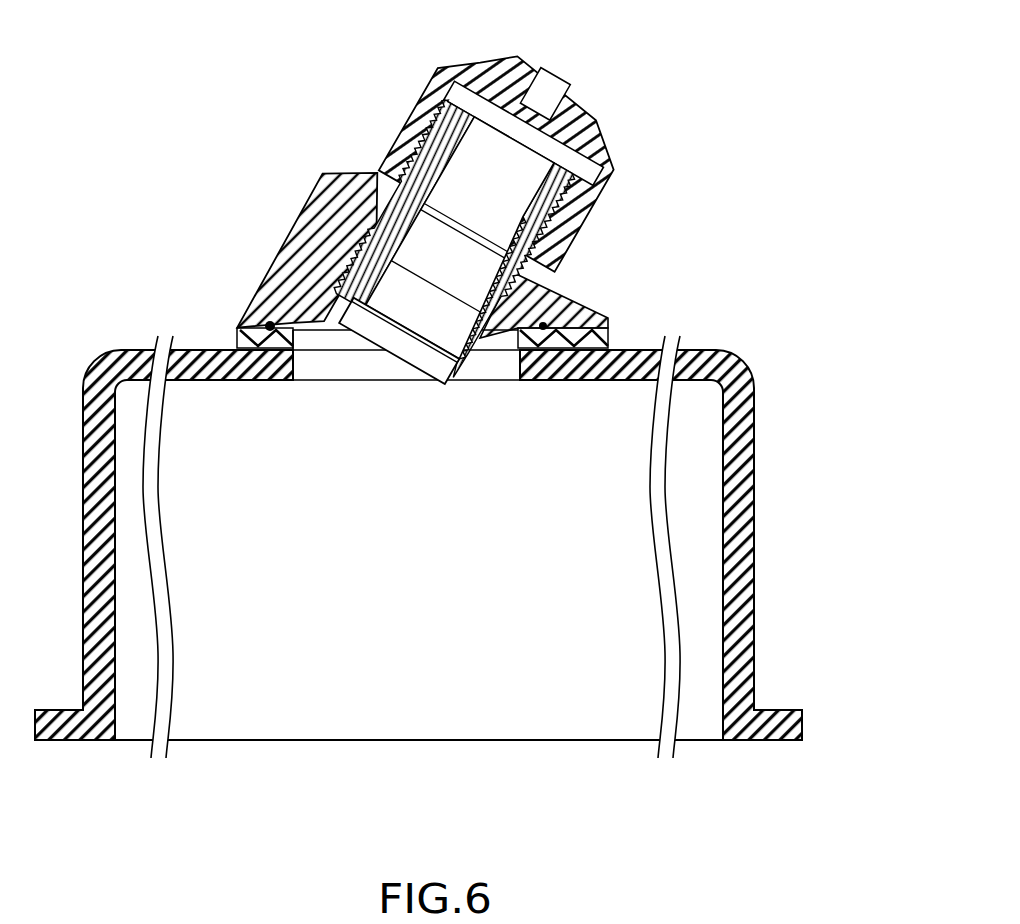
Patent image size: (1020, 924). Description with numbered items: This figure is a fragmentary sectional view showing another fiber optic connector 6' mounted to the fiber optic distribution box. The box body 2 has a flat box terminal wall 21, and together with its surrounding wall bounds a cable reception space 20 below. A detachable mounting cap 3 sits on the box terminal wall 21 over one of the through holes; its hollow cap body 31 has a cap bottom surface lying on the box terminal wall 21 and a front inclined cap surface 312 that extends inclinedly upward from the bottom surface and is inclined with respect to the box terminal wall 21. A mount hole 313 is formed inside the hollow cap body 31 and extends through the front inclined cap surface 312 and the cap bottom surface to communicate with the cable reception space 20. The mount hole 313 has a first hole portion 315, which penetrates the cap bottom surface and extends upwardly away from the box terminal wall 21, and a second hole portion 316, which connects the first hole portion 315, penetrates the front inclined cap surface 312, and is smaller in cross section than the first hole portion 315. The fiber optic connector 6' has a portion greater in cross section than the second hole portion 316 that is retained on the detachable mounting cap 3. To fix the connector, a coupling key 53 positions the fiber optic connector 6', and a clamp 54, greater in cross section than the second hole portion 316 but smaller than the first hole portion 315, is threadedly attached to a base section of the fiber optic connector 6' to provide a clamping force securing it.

The box body 2 is at (178, 778).
The cable reception space 20 is at (455, 718).
The box terminal wall 21 is at (184, 347).
The detachable mounting cap 3 is at (394, 239).
The hollow cap body 31 is at (438, 239).
The front inclined cap surface 312 is at (598, 308).
The mount hole 313 is at (308, 304).
The first hole portion 315 is at (353, 253).
The second hole portion 316 is at (552, 244).
The coupling key 53 is at (355, 265).
The clamp 54 is at (482, 350).
The fiber optic connector 6' is at (551, 147).